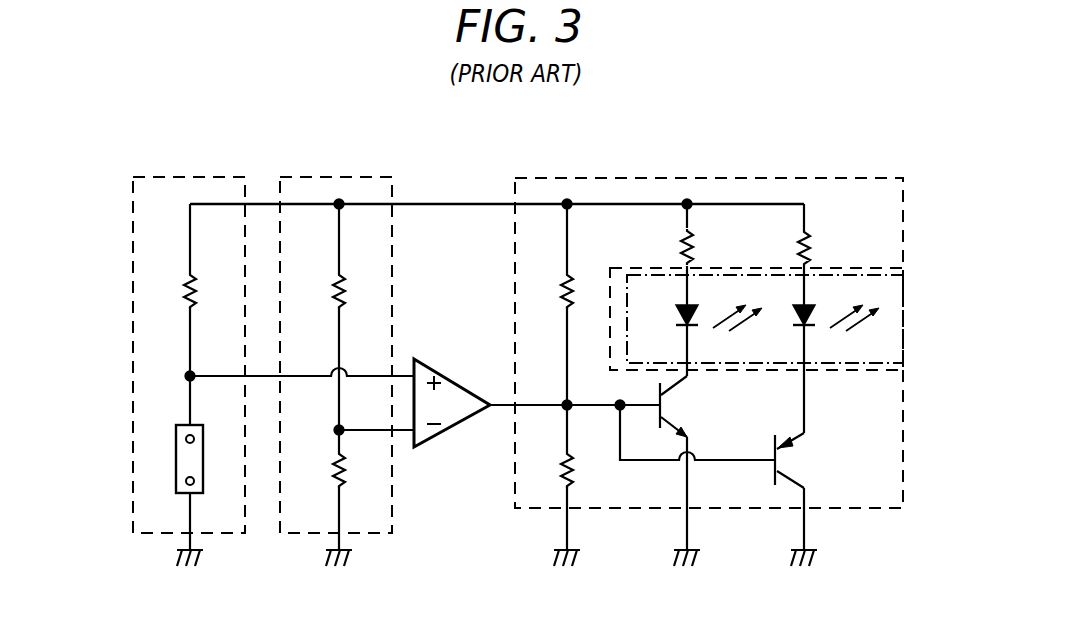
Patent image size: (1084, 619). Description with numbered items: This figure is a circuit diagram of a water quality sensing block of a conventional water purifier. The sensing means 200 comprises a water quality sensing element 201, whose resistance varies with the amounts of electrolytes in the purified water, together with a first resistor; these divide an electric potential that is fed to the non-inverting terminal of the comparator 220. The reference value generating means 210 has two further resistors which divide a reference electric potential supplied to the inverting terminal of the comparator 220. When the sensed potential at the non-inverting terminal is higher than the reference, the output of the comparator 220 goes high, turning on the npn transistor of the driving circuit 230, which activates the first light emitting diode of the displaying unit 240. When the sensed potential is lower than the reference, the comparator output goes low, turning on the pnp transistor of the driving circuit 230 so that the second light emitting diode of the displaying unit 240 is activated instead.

The sensing means 200 is at (245, 176).
The water quality sensing element 201 is at (203, 493).
The reference value generating means 210 is at (392, 176).
The comparator 220 is at (423, 362).
The driving circuit 230 is at (885, 178).
The displaying unit 240 is at (903, 292).